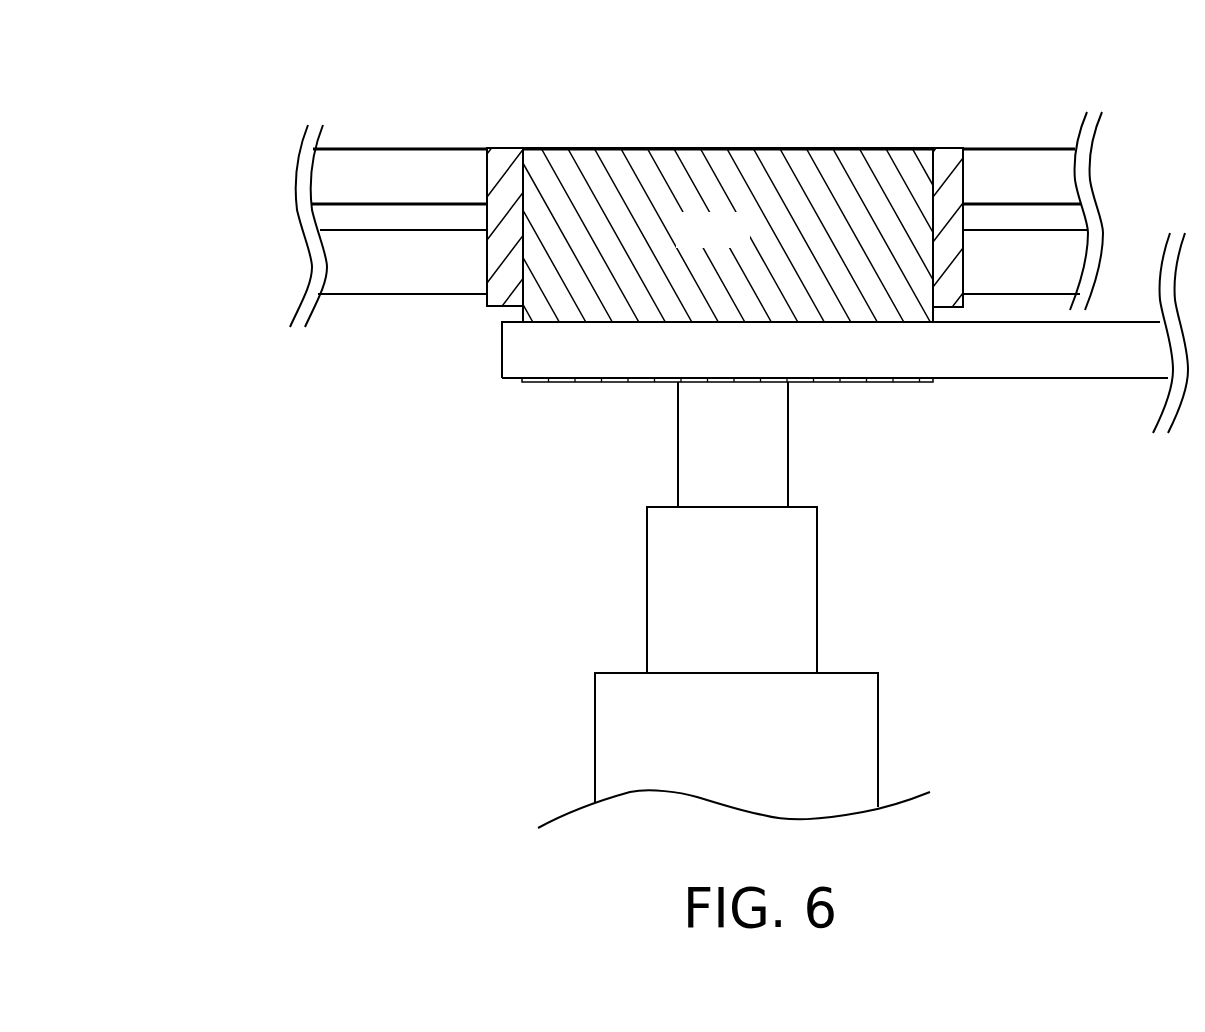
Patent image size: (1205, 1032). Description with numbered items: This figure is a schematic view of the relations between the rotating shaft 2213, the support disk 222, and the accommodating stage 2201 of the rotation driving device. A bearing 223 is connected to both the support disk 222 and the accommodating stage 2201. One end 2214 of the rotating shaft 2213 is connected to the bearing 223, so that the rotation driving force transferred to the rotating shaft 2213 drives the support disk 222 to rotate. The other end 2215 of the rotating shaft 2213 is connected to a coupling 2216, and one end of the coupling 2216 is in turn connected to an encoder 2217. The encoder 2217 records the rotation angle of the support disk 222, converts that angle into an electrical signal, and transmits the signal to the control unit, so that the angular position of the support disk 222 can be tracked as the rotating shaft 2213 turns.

The support disk 222 is at (465, 155).
The bearing 223 is at (502, 160).
The accommodating stage 2201 is at (343, 262).
The rotating shaft 2213 is at (748, 247).
The one end of the rotating shaft 2214 is at (750, 148).
The other end of the rotating shaft 2215 is at (580, 383).
The coupling 2216 is at (788, 592).
The encoder 2217 is at (858, 750).